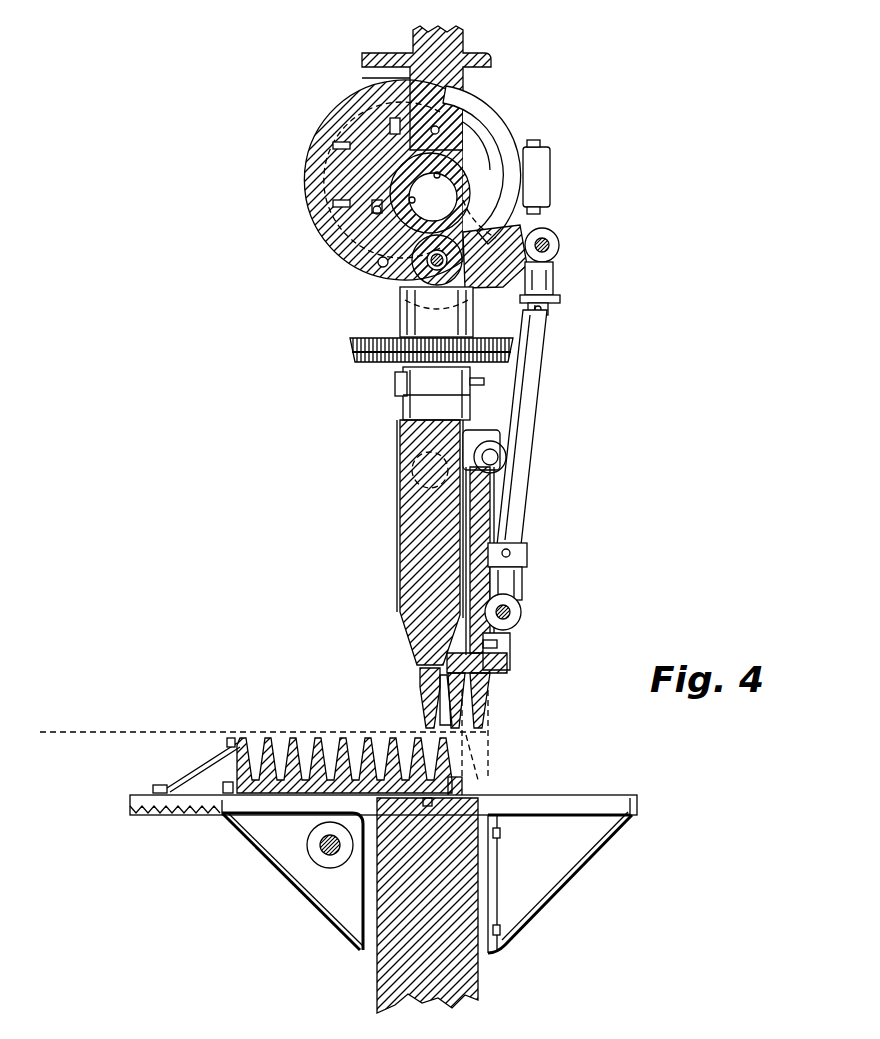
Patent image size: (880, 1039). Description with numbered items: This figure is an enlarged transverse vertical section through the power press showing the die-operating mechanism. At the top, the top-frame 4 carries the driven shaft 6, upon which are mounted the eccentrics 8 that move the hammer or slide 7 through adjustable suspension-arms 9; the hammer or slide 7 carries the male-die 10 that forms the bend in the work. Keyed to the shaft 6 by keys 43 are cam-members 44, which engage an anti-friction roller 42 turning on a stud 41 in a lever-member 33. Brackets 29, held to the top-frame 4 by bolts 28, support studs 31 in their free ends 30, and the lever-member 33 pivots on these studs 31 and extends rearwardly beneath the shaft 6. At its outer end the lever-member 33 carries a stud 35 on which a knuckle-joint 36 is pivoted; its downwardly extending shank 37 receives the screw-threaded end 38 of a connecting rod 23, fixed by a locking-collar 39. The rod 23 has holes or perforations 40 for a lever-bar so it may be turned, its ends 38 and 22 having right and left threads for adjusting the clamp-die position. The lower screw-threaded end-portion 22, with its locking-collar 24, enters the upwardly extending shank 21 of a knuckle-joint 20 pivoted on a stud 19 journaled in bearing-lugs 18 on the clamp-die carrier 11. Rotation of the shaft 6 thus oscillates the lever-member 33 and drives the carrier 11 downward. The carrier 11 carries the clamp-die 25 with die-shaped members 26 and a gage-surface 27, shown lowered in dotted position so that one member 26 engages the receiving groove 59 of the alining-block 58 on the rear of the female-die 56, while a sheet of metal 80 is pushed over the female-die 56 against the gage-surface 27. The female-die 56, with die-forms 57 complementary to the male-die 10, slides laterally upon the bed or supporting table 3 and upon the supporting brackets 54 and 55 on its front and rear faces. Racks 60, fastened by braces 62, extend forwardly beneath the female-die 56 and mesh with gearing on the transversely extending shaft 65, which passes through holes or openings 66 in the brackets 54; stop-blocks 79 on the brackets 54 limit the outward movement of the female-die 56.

The bed or supporting table 3 is at (467, 800).
The top-frame 4 is at (455, 85).
The driven shaft 6 is at (550, 160).
The hammer or slide 7 is at (420, 526).
The eccentrics 8 is at (470, 122).
The adjustable suspension-arms 9 is at (407, 318).
The male-die 10 is at (428, 700).
The clamp-die carrier 11 is at (487, 653).
The bearing-lugs 18 is at (508, 634).
The studs 19 is at (512, 608).
The knuckle-joints 20 is at (517, 617).
The upwardly extending shanks 21 is at (508, 580).
The screw-threaded end-portions 22 is at (485, 515).
The connecting rods 23 is at (530, 407).
The locking-collar 24 is at (514, 553).
The clamp-die 25 is at (497, 680).
The die-shaped members 26 is at (483, 722).
The gage-surface 27 is at (448, 690).
The bolts 28 is at (390, 125).
The brackets 29 is at (312, 158).
The free ends 30 is at (378, 290).
The studs 31 is at (380, 264).
The lever-members 33 is at (505, 280).
The studs 35 is at (548, 243).
The knuckle-joints 36 is at (560, 248).
The downwardly extending shanks 37 is at (553, 276).
The screw-threaded ends 38 is at (542, 318).
The locking-collars 39 is at (560, 299).
The holes or perforations 40 is at (546, 313).
The stud 41 is at (468, 190).
The anti-friction roller 42 is at (462, 256).
The keys 43 is at (500, 160).
The cam-members 44 is at (478, 130).
The supporting brackets 54 is at (287, 808).
The supporting brackets 55 is at (602, 804).
The female-die 56 is at (273, 783).
The die-forms 57 is at (332, 740).
The alining-block 58 is at (462, 783).
The receiving groove 59 is at (458, 770).
The racks 60 is at (157, 800).
The braces 62 is at (228, 787).
The transversely extending shaft 65 is at (322, 858).
The holes or openings 66 is at (329, 848).
The stop-blocks 79 is at (205, 770).
The sheet of metal 80 is at (140, 729).